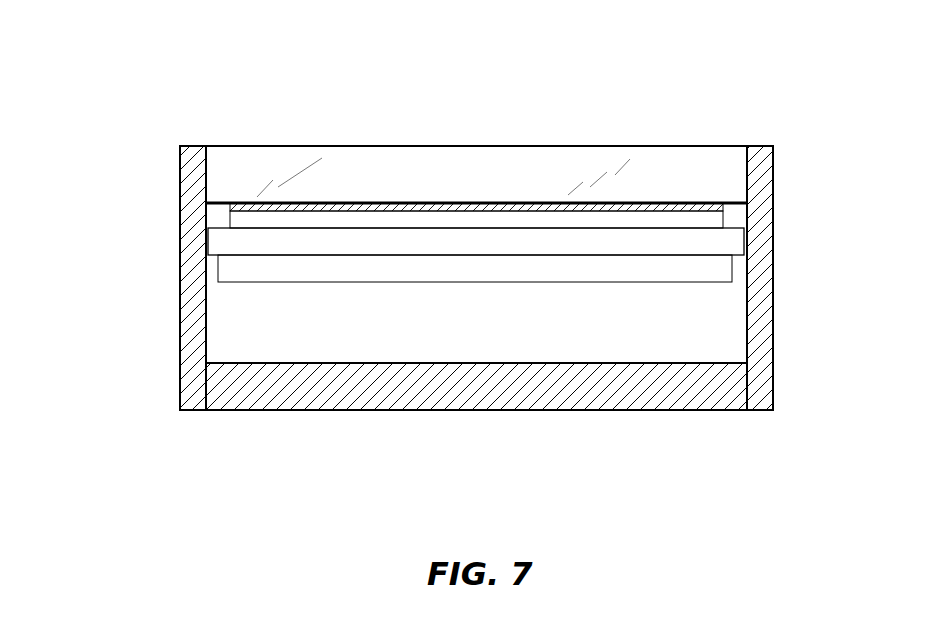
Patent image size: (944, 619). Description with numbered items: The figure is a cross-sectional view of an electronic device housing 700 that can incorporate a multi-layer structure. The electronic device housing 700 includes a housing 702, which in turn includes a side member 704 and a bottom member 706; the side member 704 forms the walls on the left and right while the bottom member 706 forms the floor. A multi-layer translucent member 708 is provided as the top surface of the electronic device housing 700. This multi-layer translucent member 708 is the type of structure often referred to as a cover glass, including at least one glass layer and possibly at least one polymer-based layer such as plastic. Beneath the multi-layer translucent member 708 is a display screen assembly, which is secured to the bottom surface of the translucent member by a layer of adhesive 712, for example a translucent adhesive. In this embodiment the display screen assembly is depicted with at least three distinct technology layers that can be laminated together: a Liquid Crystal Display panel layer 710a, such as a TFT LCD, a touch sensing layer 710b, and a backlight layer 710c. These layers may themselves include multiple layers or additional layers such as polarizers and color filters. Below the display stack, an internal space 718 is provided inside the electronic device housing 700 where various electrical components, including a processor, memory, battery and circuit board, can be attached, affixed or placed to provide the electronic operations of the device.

The electronic device housing 700 is at (107, 82).
The housing 702 is at (116, 412).
The side member 704 is at (180, 363).
The bottom member 706 is at (358, 410).
The multi-layer translucent member 708 is at (497, 186).
The Liquid Crystal Display (LCD) panel layer 710a is at (377, 220).
The touch sensing layer 710b is at (295, 242).
The backlight layer 710c is at (232, 270).
The adhesive layer 712 is at (539, 203).
The internal space 718 is at (497, 342).